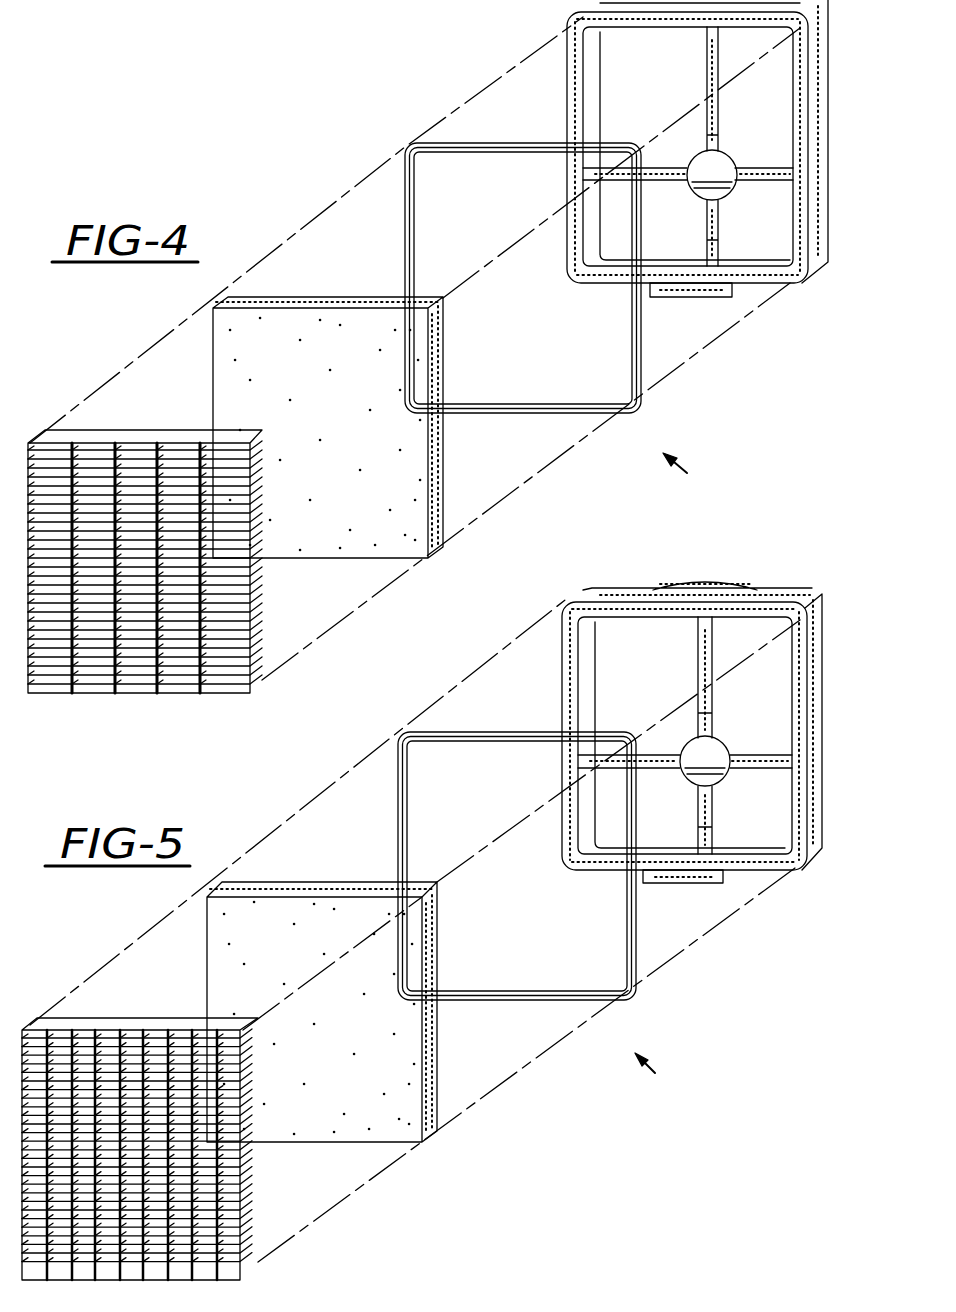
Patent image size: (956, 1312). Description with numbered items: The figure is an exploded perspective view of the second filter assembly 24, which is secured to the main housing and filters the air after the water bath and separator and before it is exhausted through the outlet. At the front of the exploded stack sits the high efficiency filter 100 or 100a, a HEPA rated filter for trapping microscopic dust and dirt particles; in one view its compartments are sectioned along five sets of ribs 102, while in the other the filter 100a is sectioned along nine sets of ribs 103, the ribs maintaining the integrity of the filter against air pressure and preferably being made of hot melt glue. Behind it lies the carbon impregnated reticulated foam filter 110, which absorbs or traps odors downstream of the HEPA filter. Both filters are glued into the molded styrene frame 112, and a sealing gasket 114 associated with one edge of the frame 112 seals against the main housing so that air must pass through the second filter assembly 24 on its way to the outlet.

In FIG. 4, the second filter assembly 24 is at (687, 473).
In FIG. 5, the second filter assembly 24 is at (655, 1073).
In FIG. 4, the high efficiency filter 100 is at (196, 561).
In FIG. 5, the high efficiency filter 100a is at (196, 1149).
In FIG. 4, the ribs 102 is at (200, 606).
In FIG. 5, the ribs 103 is at (223, 1187).
In FIG. 4, the carbon impregnated reticulated foam filter 110 is at (442, 505).
In FIG. 5, the carbon impregnated reticulated foam filter 110 is at (430, 1092).
In FIG. 4, the molded styrene frame 112 is at (808, 286).
In FIG. 5, the molded styrene frame 112 is at (807, 857).
In FIG. 4, the sealing gasket 114 is at (404, 188).
In FIG. 5, the sealing gasket 114 is at (397, 797).